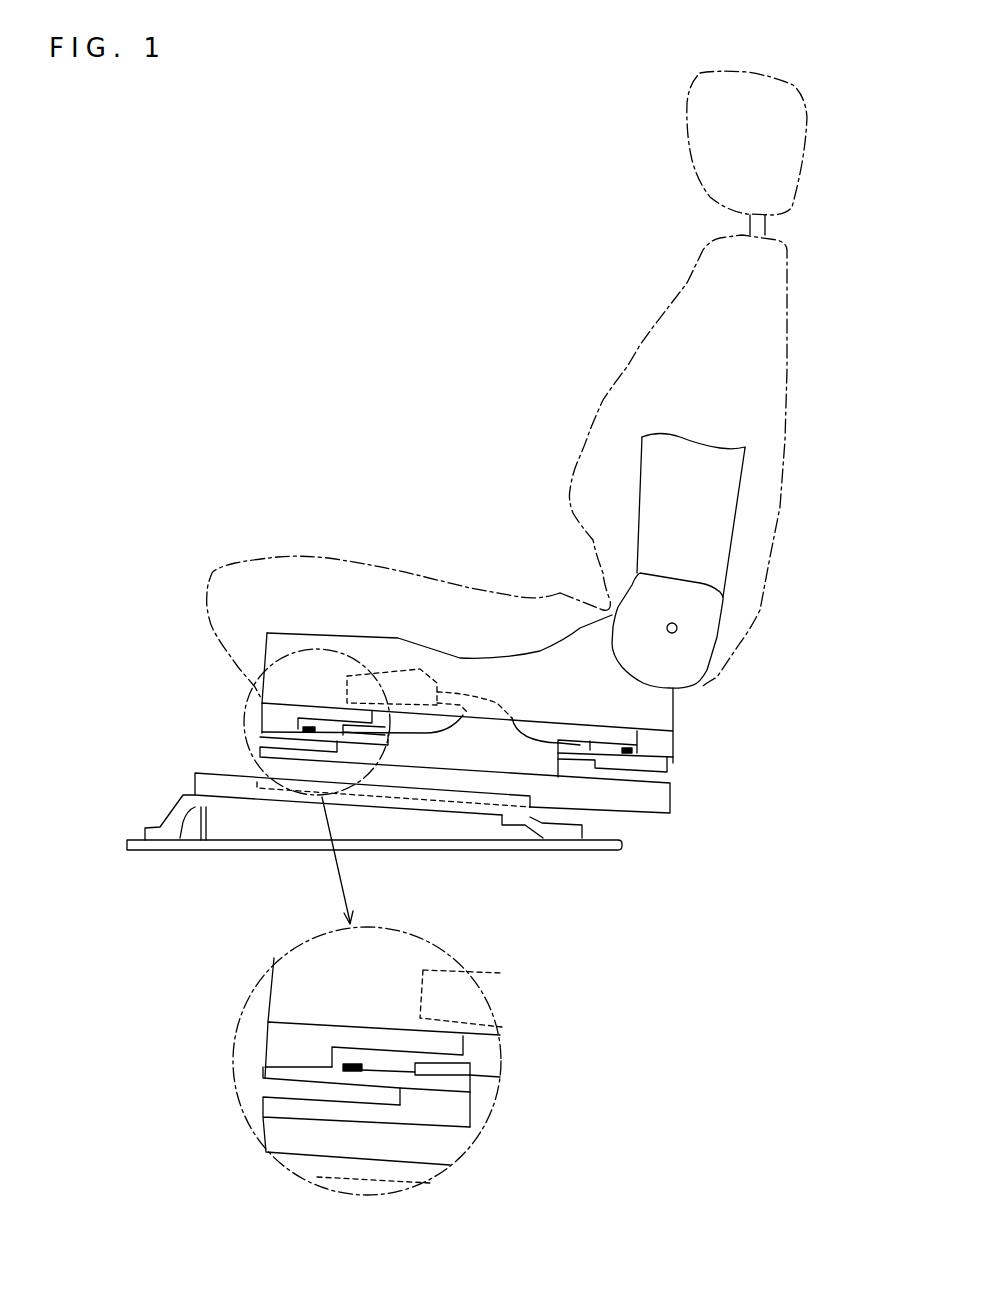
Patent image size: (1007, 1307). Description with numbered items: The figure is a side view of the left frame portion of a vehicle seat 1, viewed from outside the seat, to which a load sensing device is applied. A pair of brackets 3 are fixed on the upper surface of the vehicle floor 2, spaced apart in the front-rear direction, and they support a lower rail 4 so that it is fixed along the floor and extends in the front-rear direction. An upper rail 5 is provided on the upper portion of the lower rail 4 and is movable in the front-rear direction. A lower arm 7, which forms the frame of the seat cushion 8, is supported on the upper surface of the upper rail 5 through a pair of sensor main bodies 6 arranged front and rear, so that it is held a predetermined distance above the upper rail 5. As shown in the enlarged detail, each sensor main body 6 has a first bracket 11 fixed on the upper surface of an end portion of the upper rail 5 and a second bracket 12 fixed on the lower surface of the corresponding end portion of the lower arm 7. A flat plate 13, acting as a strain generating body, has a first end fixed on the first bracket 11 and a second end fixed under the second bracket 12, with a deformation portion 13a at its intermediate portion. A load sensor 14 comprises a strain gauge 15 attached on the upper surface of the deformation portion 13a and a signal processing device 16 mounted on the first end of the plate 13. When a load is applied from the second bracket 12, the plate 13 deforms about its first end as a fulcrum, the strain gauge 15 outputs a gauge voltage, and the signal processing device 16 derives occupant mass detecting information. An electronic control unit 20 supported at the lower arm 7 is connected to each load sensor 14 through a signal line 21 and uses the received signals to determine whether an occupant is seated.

The seat 1 is at (583, 337).
The vehicle floor 2 is at (135, 839).
The brackets 3 is at (158, 827).
The lower rail 4 is at (205, 772).
The upper rail 5 is at (652, 808).
The sensor main bodies 6 is at (268, 713).
The lower arm 7 is at (367, 643).
The seat cushion 8 is at (273, 557).
The first bracket 11 is at (335, 1112).
The second bracket 12 is at (300, 1037).
The plate 13 is at (270, 1073).
The deformation portion 13a is at (352, 1077).
The load sensor 14 is at (273, 604).
The strain gauge 15 is at (309, 727).
The signal processing device 16 is at (345, 725).
The electronic control unit 20 is at (410, 675).
The signal line 21 is at (428, 733).